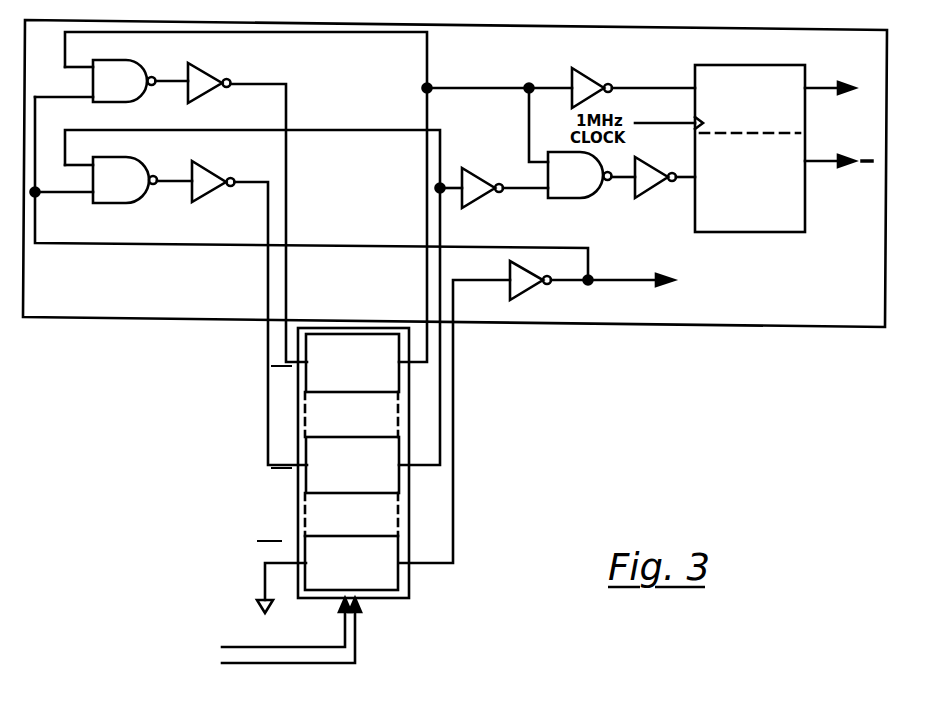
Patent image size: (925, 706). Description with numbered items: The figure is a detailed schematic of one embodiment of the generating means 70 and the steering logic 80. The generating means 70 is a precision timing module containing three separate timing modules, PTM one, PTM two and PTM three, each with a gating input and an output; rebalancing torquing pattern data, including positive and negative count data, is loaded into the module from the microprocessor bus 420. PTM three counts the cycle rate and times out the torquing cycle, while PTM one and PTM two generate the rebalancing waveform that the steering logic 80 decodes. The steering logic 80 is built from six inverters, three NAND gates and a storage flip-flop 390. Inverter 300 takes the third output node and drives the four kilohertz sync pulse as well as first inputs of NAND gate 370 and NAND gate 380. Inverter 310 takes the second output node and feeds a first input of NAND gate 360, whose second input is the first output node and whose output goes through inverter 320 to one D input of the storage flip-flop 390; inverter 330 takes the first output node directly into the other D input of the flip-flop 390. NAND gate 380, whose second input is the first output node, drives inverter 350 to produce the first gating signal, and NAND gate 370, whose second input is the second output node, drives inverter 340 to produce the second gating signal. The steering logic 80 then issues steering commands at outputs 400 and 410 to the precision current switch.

The steering logic 80 is at (690, 326).
The NAND gate 380 is at (135, 60).
The inverter 350 is at (212, 70).
The NAND gate 370 is at (138, 157).
The inverter 340 is at (218, 169).
The inverter 310 is at (478, 204).
The NAND gate 360 is at (578, 198).
The inverter 320 is at (650, 193).
The inverter 330 is at (598, 78).
The storage flip-flop 390 is at (805, 216).
The output 400 is at (822, 90).
The output 410 is at (820, 163).
The inverter 300 is at (528, 290).
The generating means 70 is at (409, 422).
The microprocessor bus 420 is at (298, 655).